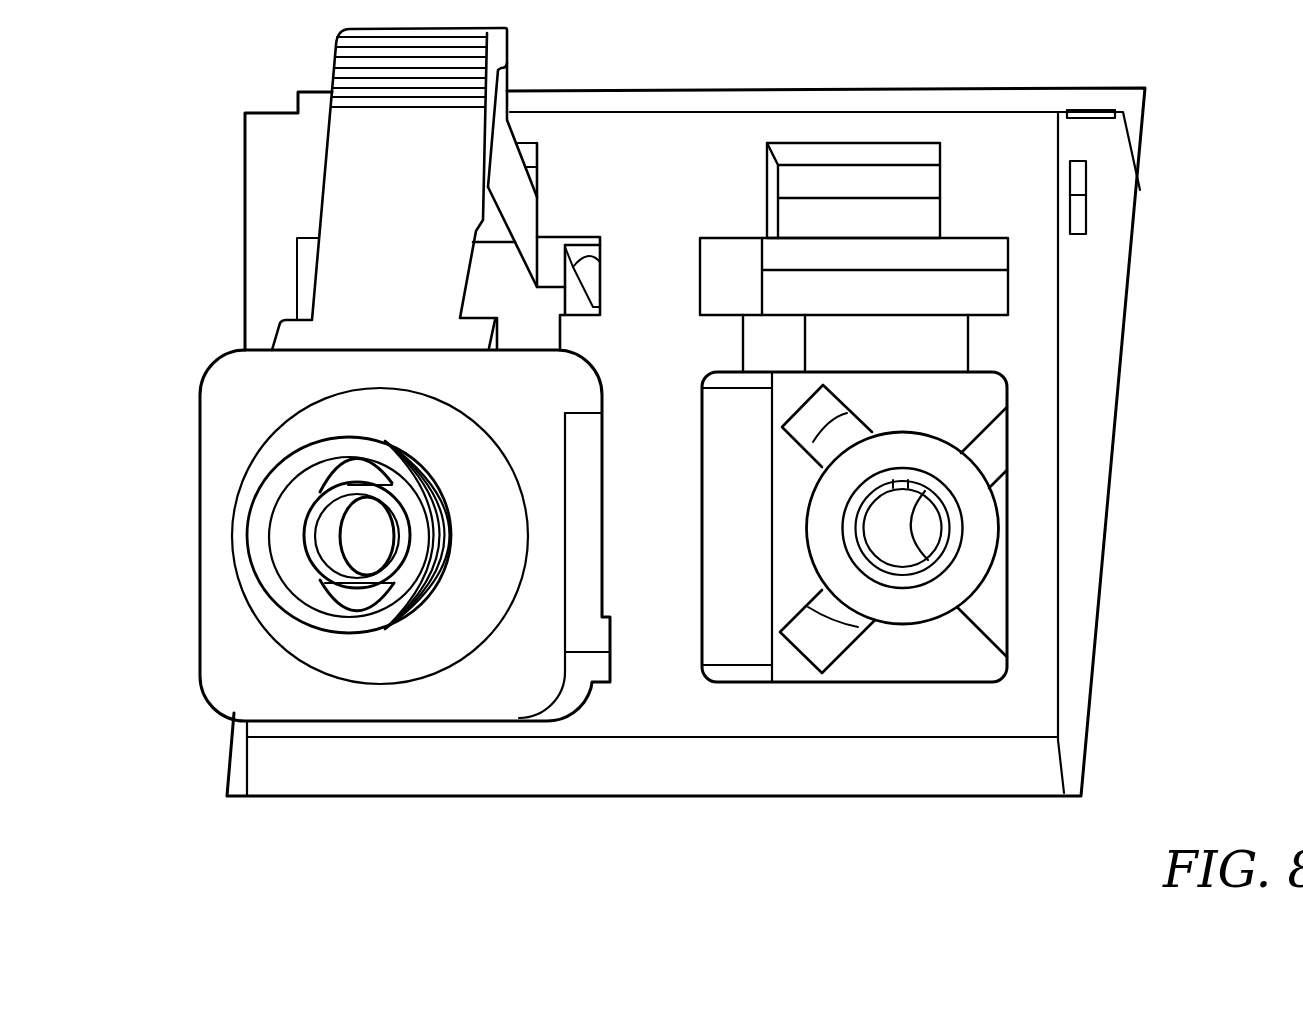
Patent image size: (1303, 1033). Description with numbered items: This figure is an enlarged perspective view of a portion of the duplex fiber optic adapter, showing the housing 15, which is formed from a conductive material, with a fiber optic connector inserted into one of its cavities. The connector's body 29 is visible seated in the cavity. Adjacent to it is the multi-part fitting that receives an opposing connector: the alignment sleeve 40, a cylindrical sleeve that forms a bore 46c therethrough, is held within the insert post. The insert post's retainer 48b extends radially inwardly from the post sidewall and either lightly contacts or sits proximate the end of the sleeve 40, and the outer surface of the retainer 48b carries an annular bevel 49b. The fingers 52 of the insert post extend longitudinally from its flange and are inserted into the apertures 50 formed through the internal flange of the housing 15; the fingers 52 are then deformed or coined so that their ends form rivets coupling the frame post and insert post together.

The housing 15 is at (648, 705).
The body 29 is at (217, 643).
The alignment sleeve 40 is at (928, 521).
The bore 46c is at (928, 558).
The retainer 48b is at (845, 545).
The annular bevel 49b is at (917, 580).
The apertures 50 is at (807, 645).
The fingers 52 is at (843, 428).